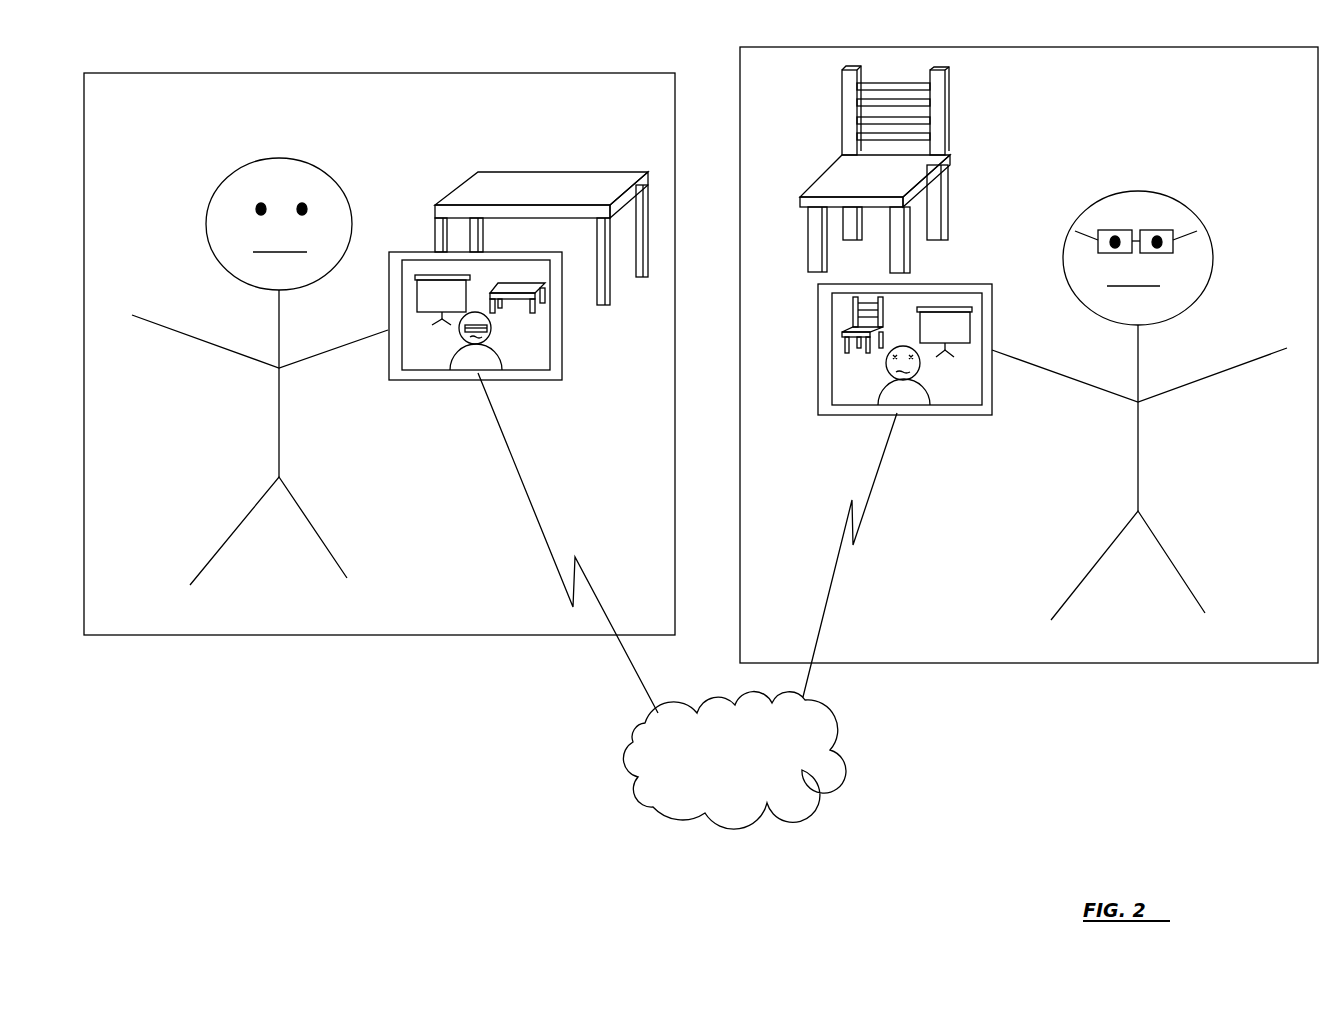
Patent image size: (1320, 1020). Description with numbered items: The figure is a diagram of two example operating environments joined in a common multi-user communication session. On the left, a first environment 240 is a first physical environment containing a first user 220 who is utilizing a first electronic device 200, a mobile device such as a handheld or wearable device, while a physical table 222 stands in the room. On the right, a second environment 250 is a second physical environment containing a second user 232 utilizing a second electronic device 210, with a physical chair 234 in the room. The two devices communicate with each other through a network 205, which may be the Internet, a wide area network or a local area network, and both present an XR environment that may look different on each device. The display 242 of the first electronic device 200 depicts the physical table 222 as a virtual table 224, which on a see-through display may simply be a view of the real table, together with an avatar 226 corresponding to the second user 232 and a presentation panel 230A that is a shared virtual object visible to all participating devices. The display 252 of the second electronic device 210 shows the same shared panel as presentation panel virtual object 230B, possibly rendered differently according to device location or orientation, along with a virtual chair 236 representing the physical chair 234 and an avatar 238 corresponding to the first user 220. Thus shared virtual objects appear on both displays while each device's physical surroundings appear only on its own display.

The first electronic device 200 is at (485, 322).
The network 205 is at (716, 787).
The second electronic device 210 is at (904, 360).
The first user 220 is at (228, 178).
The physical table 222 is at (473, 170).
The virtual table 224 is at (543, 298).
The avatar 226 is at (490, 327).
The presentation panel 230A is at (443, 275).
The presentation panel virtual object 230B is at (948, 302).
The second user 232 is at (1178, 203).
The physical chair 234 is at (950, 112).
The virtual chair 236 is at (853, 323).
The avatar 238 is at (930, 393).
The first environment 240 is at (370, 72).
The display 242 is at (427, 348).
The second environment 250 is at (1028, 47).
The display 252 is at (858, 383).